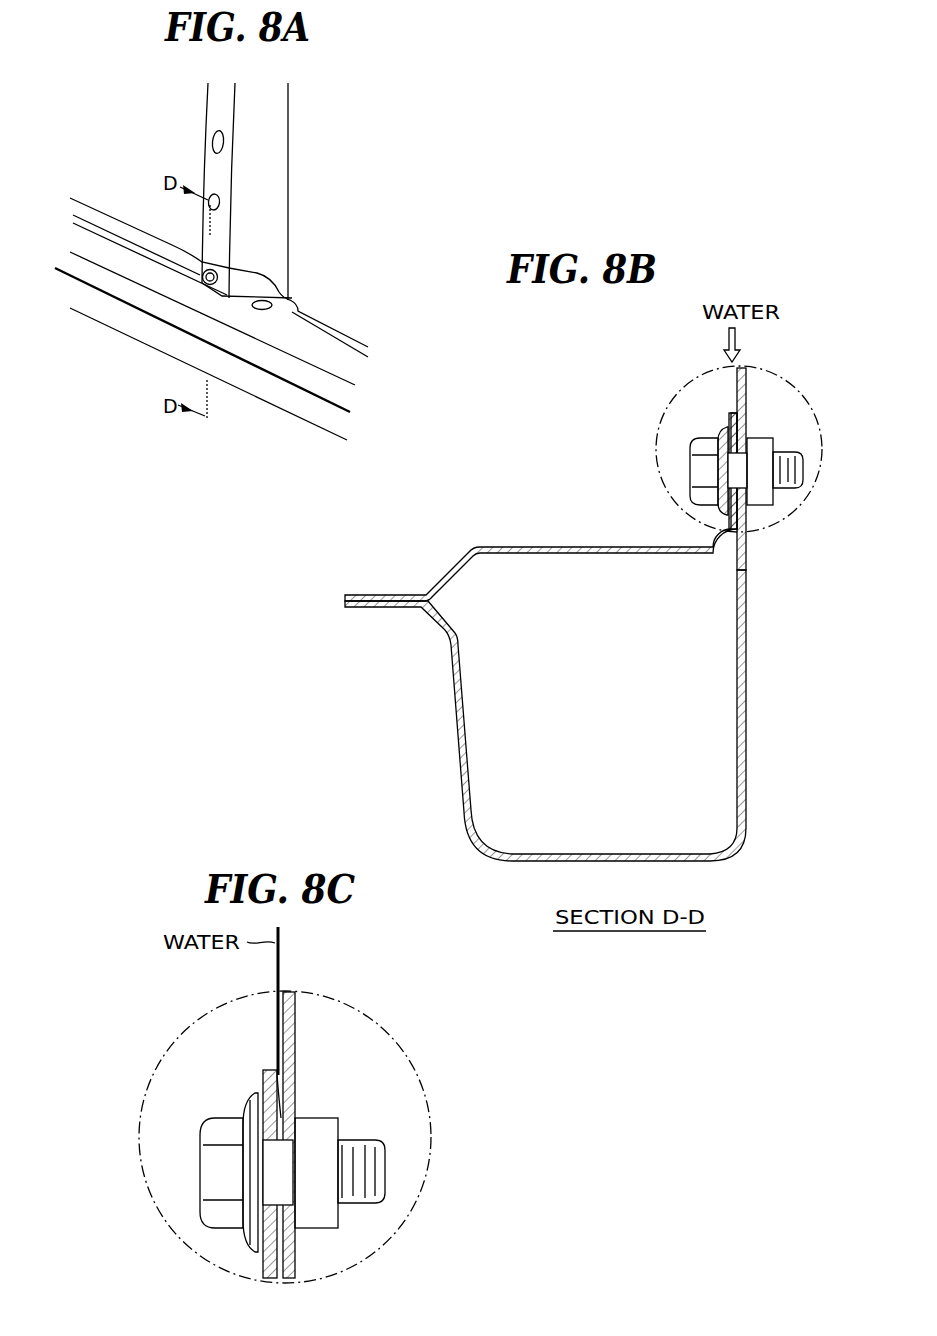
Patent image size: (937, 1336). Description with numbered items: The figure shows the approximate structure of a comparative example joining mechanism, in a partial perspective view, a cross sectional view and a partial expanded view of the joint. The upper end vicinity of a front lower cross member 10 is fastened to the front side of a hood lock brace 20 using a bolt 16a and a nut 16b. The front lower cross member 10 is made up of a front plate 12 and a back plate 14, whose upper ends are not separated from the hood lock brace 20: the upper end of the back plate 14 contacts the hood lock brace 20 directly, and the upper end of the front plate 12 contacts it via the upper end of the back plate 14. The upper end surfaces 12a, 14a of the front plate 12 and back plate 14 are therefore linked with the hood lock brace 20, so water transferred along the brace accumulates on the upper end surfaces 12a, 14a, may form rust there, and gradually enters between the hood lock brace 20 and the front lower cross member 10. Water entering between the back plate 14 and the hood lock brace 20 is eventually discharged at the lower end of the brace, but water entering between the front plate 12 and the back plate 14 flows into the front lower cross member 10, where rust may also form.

In FIG. 8A, the front lower cross member 10 is at (243, 307).
In FIG. 8B, the front lower cross member 10 is at (484, 594).
In FIG. 8B, the front plate 12 is at (504, 494).
In FIG. 8B, the upper end surface 12a is at (728, 414).
In FIG. 8C, the upper end surface 12a is at (272, 1070).
In FIG. 8B, the back plate 14 is at (509, 594).
In FIG. 8B, the upper end surface 14a is at (737, 412).
In FIG. 8C, the upper end surface 14a is at (297, 1052).
In FIG. 8A, the bolt 16a is at (200, 288).
In FIG. 8B, the bolt 16a is at (695, 470).
In FIG. 8C, the bolt 16a is at (208, 1172).
In FIG. 8B, the nut 16b is at (758, 497).
In FIG. 8C, the nut 16b is at (318, 1212).
In FIG. 8A, the hood lock brace 20 is at (290, 157).